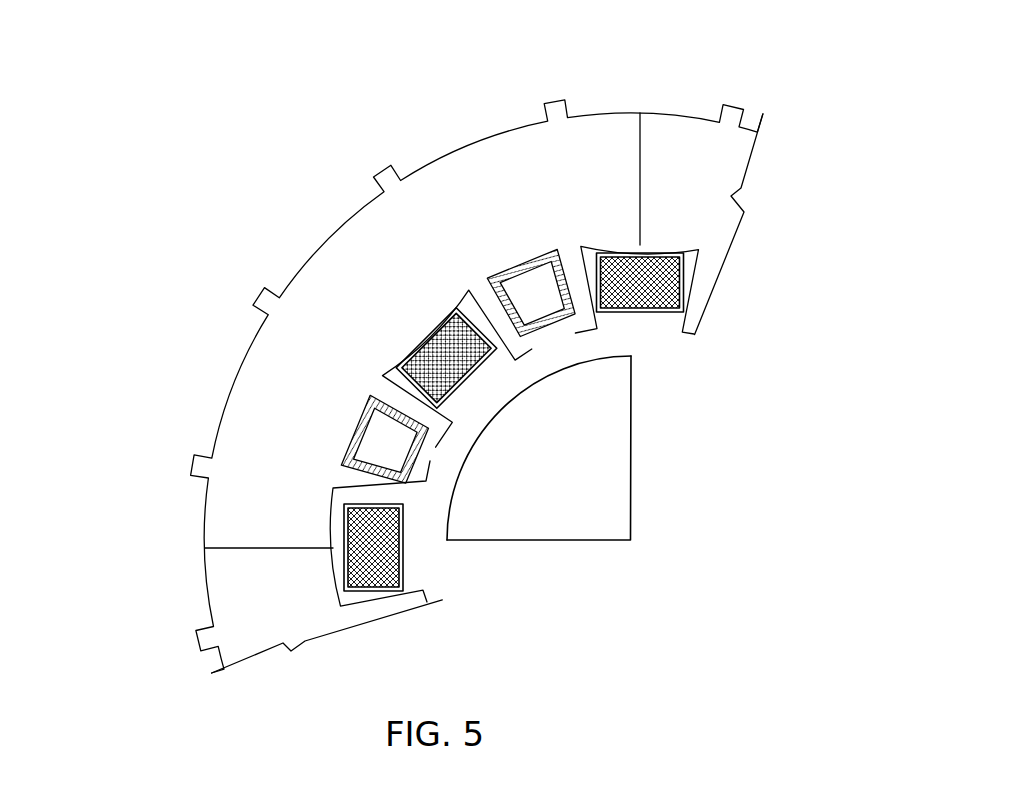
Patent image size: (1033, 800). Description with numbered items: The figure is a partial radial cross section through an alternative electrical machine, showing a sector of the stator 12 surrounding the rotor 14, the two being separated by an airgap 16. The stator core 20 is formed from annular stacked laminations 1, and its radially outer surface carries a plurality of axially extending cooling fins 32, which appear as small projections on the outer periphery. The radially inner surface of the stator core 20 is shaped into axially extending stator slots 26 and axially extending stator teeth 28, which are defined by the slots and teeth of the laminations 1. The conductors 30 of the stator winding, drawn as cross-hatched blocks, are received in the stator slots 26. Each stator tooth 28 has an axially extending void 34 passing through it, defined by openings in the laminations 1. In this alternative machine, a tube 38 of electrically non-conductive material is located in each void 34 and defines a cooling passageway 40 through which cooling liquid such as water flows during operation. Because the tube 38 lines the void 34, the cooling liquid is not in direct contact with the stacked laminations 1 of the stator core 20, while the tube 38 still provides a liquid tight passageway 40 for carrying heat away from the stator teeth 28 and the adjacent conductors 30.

The stacked laminations 1 is at (675, 138).
The stator 12 is at (809, 61).
The rotor 14 is at (674, 480).
The airgap 16 is at (614, 348).
The stator core 20 is at (481, 175).
The stator slots 26 is at (487, 318).
The stator teeth 28 is at (562, 330).
The conductors 30 is at (626, 296).
The cooling fins 32 is at (731, 106).
The voids 34 is at (537, 316).
The tube 38 is at (493, 287).
The cooling passageway 40 is at (560, 282).